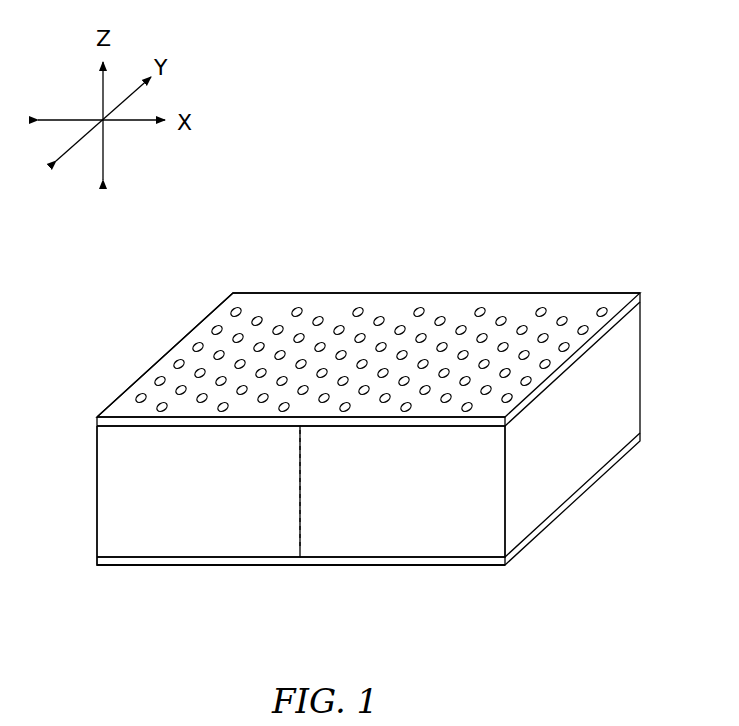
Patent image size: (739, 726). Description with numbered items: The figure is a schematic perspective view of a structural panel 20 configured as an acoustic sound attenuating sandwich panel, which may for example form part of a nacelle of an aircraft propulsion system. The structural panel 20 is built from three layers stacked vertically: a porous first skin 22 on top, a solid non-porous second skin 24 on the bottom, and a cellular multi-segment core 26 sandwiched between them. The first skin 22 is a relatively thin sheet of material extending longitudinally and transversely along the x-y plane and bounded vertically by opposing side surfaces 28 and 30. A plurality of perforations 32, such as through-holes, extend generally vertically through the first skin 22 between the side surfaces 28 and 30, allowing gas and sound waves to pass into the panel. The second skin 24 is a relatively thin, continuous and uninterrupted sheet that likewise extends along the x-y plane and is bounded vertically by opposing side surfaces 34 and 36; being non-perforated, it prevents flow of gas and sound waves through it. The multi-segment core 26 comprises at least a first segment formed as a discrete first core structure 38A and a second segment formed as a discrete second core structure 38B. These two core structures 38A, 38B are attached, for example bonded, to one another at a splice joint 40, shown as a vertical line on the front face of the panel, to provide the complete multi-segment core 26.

The structural panel 20 is at (599, 250).
The porous first skin 22 is at (130, 408).
The solid non-porous second skin 24 is at (126, 568).
The cellular multi-segment core 26 is at (105, 505).
The side surface of first skin 28 is at (104, 427).
The side surface of first skin 30 is at (99, 412).
The perforations 32 is at (356, 308).
The side surface of second skin 34 is at (106, 557).
The side surface of second skin 36 is at (108, 568).
The first core structure 38A is at (215, 558).
The second core structure 38B is at (390, 540).
The splice joint 40 is at (291, 551).